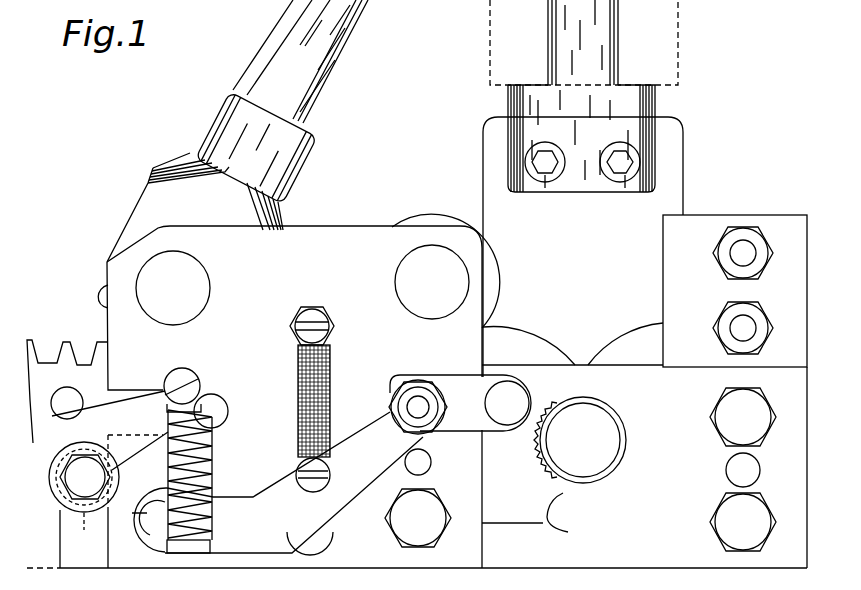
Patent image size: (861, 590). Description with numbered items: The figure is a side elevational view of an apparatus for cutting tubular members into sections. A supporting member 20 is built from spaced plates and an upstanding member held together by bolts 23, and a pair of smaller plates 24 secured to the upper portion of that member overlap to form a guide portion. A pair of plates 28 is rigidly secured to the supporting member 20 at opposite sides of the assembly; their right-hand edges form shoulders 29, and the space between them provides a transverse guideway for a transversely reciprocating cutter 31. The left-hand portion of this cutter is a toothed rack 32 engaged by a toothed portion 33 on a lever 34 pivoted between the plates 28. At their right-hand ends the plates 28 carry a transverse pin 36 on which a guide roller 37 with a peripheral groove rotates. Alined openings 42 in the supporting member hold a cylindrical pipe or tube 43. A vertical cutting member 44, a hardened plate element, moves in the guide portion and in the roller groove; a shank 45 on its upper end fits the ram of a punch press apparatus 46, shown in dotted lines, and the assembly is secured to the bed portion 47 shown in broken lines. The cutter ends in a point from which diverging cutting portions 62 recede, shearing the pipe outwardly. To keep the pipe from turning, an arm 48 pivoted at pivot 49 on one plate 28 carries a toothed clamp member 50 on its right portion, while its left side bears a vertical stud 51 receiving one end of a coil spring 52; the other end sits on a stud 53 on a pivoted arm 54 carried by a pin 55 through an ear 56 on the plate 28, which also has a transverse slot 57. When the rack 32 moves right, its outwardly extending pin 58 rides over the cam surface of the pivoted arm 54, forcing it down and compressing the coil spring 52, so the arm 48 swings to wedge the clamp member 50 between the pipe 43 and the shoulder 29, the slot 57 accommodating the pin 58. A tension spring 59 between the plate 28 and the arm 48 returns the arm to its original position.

The supporting member 20 is at (767, 568).
The bolts 23 is at (725, 422).
The smaller plates 24 is at (703, 225).
The plates 28 is at (358, 228).
The shoulders 29 is at (482, 546).
The transversely reciprocating cutter 31 is at (42, 446).
The toothed rack 32 is at (68, 342).
The toothed portion 33 is at (100, 290).
The lever 34 is at (290, 42).
The transverse pin 36 is at (408, 262).
The guide roller 37 is at (437, 215).
The alined openings 42 is at (612, 463).
The pipe or tube 43 is at (590, 490).
The vertical cutting member 44 is at (684, 166).
The shank 45 is at (657, 105).
The punch press apparatus 46 is at (680, 22).
The bed portion 47 is at (40, 569).
The arm 48 is at (398, 398).
The pivot 49 is at (418, 405).
The clamp member 50 is at (570, 517).
The vertical stud 51 is at (182, 555).
The coil spring 52 is at (210, 467).
The stud 53 is at (188, 372).
The pivoted arm 54 is at (138, 398).
The pin 55 is at (75, 488).
The ear 56 is at (84, 539).
The transverse slot 57 is at (220, 395).
The pin 58 is at (58, 398).
The tension spring 59 is at (332, 360).
The diverging cutting portions 62 is at (530, 335).